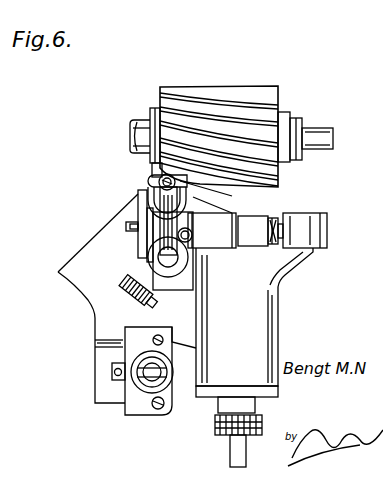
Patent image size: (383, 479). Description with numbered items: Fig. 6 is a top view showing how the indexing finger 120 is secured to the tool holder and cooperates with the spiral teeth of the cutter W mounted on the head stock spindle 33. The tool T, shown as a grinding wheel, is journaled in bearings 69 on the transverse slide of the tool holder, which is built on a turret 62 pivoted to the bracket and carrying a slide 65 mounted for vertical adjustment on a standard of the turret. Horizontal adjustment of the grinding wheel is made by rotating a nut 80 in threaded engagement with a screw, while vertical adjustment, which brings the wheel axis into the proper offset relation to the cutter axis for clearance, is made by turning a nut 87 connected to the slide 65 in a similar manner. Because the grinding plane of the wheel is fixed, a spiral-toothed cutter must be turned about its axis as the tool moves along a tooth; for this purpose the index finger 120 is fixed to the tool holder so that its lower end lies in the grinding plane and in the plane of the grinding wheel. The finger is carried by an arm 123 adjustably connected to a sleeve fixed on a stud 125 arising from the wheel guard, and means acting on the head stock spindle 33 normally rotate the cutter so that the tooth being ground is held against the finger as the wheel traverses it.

The grinding wheel W is at (279, 97).
The head stock spindle 33 is at (132, 133).
The indexing finger 120 is at (150, 178).
The arm 123 is at (142, 202).
The stud 125 is at (150, 250).
The tool T is at (231, 214).
The bearings 69 is at (307, 213).
The turret 62 is at (82, 287).
The slide 65 is at (278, 320).
The nut 87 is at (135, 378).
The nut 80 is at (262, 423).